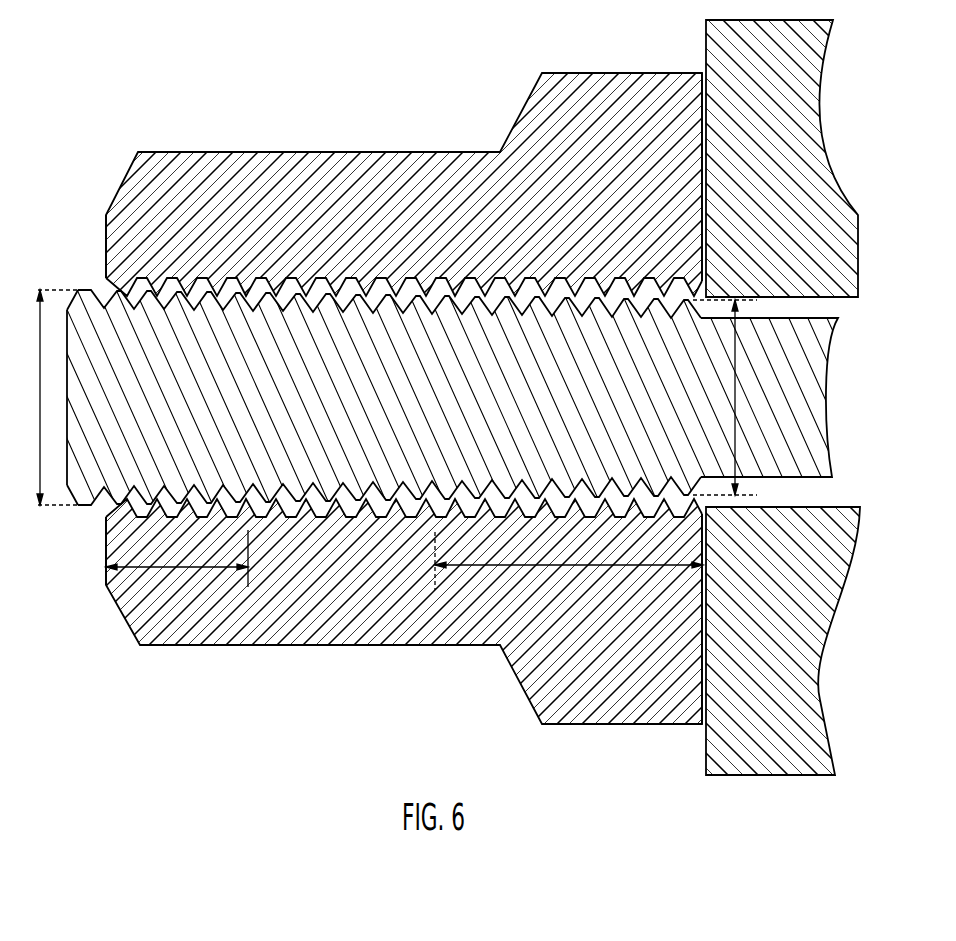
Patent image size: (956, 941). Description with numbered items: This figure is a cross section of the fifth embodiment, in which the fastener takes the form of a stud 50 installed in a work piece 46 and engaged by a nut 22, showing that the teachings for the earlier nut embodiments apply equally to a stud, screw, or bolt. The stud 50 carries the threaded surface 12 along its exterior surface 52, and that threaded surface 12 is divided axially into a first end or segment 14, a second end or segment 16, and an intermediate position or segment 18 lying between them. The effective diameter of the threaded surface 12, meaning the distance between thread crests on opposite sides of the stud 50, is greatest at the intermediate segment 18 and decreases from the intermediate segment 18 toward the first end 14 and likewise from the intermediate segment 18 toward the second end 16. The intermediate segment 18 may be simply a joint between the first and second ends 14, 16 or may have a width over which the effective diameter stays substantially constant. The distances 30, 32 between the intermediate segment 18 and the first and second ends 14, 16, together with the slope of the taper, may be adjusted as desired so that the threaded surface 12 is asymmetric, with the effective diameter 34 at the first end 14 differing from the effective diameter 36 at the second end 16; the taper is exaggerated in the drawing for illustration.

The threaded surface 12 is at (215, 507).
The first end or segment 14 is at (706, 297).
The second end or segment 16 is at (107, 282).
The intermediate position or segment 18 is at (385, 278).
The nut 22 is at (193, 152).
The distance between intermediate segment and first end 30 is at (573, 567).
The distance between intermediate segment and second end 32 is at (148, 575).
The effective diameter at the first end 34 is at (735, 432).
The effective diameter at the second end 36 is at (40, 398).
The workpiece 46 is at (790, 180).
The stud 50 is at (377, 406).
The exterior surface 52 is at (462, 278).